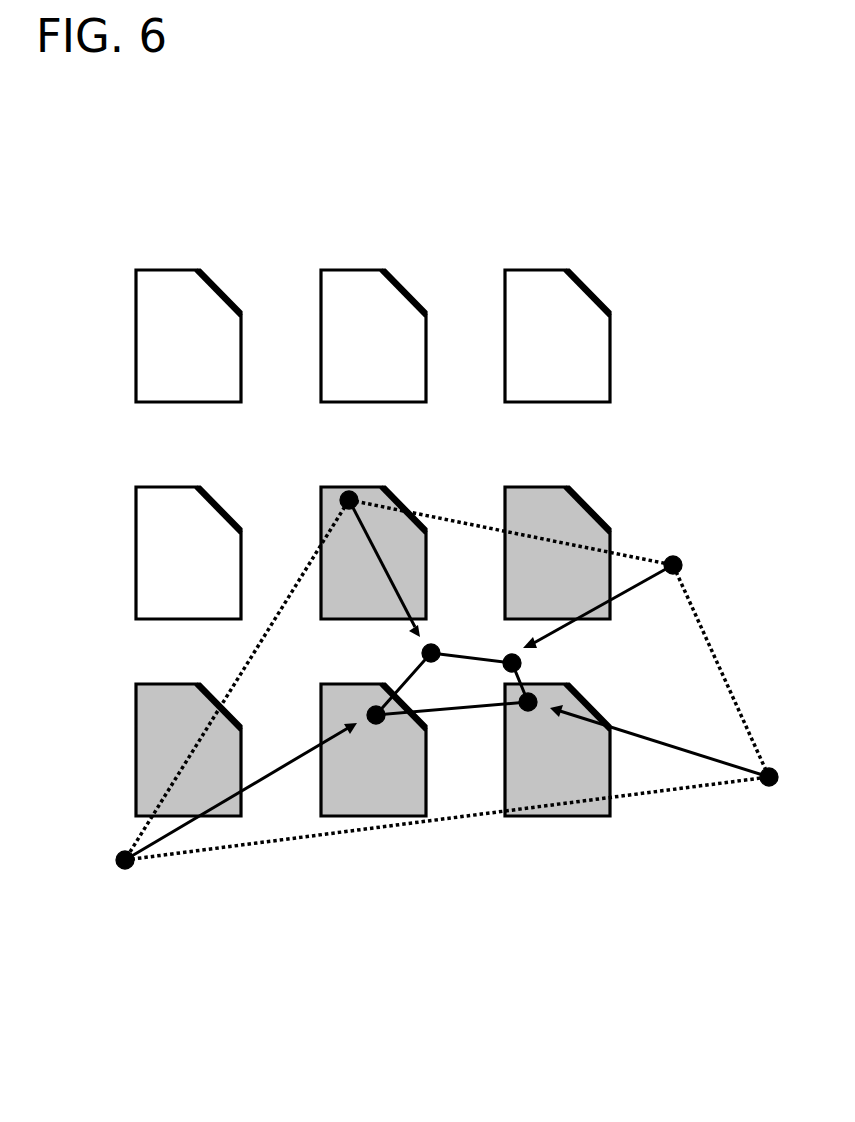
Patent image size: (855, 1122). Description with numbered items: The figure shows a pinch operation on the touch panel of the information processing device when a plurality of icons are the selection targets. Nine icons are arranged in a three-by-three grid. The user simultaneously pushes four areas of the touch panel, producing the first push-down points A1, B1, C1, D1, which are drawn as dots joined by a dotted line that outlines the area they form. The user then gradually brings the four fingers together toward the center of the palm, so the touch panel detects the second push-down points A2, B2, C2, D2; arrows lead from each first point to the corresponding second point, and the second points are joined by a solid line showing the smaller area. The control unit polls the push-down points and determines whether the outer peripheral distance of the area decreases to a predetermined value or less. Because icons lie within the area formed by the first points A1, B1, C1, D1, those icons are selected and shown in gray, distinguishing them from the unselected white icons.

The push-down point A1 is at (352, 474).
The push-down point B1 is at (122, 874).
The push-down point C1 is at (768, 792).
The push-down point D1 is at (681, 546).
The push-down point A2 is at (447, 625).
The push-down point B2 is at (370, 731).
The push-down point C2 is at (540, 720).
The push-down point D2 is at (544, 652).